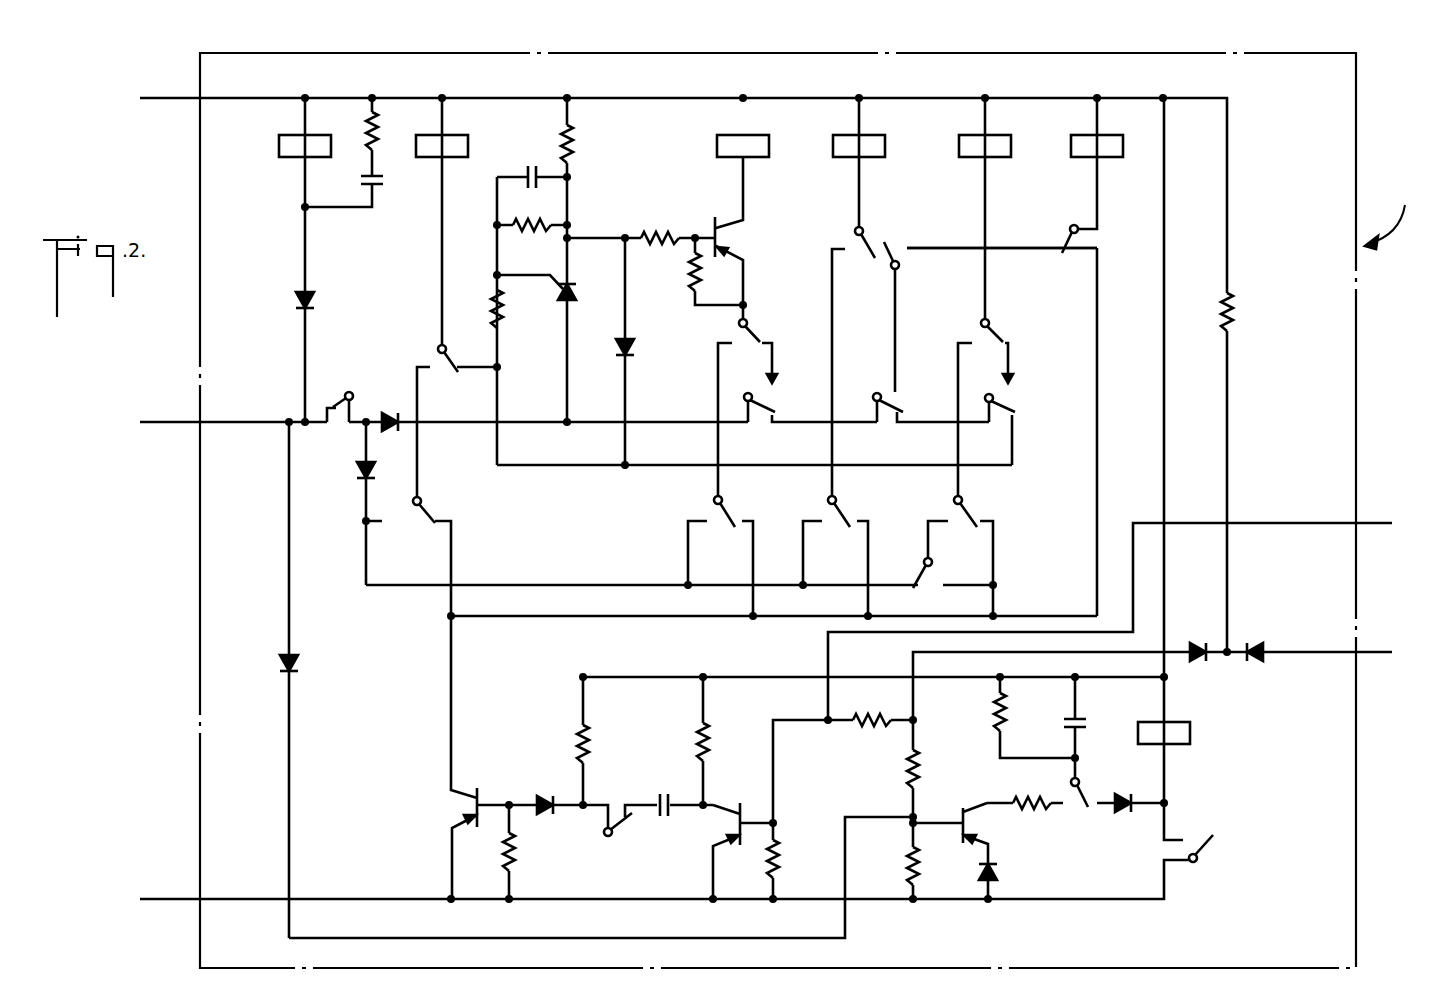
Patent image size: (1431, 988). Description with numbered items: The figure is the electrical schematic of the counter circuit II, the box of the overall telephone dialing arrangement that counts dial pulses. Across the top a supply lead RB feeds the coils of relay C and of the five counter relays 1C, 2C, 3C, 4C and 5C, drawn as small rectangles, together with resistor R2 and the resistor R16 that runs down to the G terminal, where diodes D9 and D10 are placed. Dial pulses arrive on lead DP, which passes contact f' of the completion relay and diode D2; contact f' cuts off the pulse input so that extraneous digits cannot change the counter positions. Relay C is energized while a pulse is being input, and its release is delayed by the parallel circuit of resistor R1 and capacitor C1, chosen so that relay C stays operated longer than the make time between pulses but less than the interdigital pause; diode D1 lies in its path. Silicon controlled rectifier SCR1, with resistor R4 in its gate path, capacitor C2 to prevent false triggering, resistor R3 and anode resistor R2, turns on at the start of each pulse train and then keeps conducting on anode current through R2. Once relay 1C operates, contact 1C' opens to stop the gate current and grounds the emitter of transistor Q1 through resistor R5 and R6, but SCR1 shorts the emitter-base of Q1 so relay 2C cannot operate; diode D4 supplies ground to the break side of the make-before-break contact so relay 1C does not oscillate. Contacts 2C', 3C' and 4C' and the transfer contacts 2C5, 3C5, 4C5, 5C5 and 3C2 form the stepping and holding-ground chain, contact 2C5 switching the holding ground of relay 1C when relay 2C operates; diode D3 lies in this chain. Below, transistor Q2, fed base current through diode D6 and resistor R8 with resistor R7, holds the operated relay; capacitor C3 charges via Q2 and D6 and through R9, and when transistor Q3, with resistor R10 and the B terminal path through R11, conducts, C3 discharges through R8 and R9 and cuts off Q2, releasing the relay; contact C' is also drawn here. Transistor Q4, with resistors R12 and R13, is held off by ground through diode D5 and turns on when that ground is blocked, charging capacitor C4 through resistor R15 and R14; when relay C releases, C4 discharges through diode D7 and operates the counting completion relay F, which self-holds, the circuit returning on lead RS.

The relay C is at (291, 260).
The resistor R1 is at (387, 137).
The capacitor C1 is at (359, 188).
The counter relay 1C is at (451, 221).
The resistor R2 is at (584, 260).
The capacitor C2 is at (532, 165).
The resistor R3 is at (532, 215).
The resistor R4 is at (480, 321).
The silicon controlled rectifier SCR1 is at (536, 305).
The diode D1 is at (322, 299).
The resistor R5 is at (641, 226).
The resistor R6 is at (699, 271).
The transistor Q1 is at (742, 240).
The diode D4 is at (645, 351).
The counter relay 2C is at (728, 132).
The counter relay 3C is at (845, 162).
The counter relay 4C is at (969, 208).
The counter relay 5C is at (1081, 163).
The contact 1C' is at (810, 403).
The contact 2C' is at (931, 403).
The contact 3C' is at (1019, 423).
The contact 4C' is at (996, 235).
The transfer contact 2C5 is at (408, 556).
The transfer contact 3C5 is at (720, 556).
The transfer contact 4C5 is at (835, 556).
The transfer contact 5C5 is at (960, 556).
The contact 3C2 is at (953, 587).
The resistor R16 is at (1250, 472).
The contact f' is at (339, 396).
The diode D2 is at (385, 408).
The diode D3 is at (348, 503).
The diode D5 is at (309, 680).
The diode D9 is at (1196, 639).
The diode D10 is at (1262, 639).
The transistor Q2 is at (457, 757).
The resistor R7 is at (524, 852).
The diode D6 is at (546, 793).
The resistor R8 is at (599, 741).
The resistor R9 is at (719, 741).
The contact C' is at (620, 832).
The capacitor C3 is at (681, 792).
The transistor Q3 is at (756, 809).
The resistor R10 is at (795, 861).
The resistor R11 is at (870, 708).
The resistor R12 is at (890, 771).
The resistor R13 is at (889, 861).
The transistor Q4 is at (974, 851).
The diode D7 is at (1040, 842).
The resistor R15 is at (1025, 793).
The resistor R14 is at (1015, 717).
The capacitor C4 is at (1089, 727).
The counting completion relay F is at (1177, 469).
The terminal B is at (1121, 616).
The terminal G is at (1165, 681).
The lead RB is at (666, 189).
The lead DP is at (424, 421).
The lead RS is at (641, 884).
The counter circuit II is at (1385, 215).